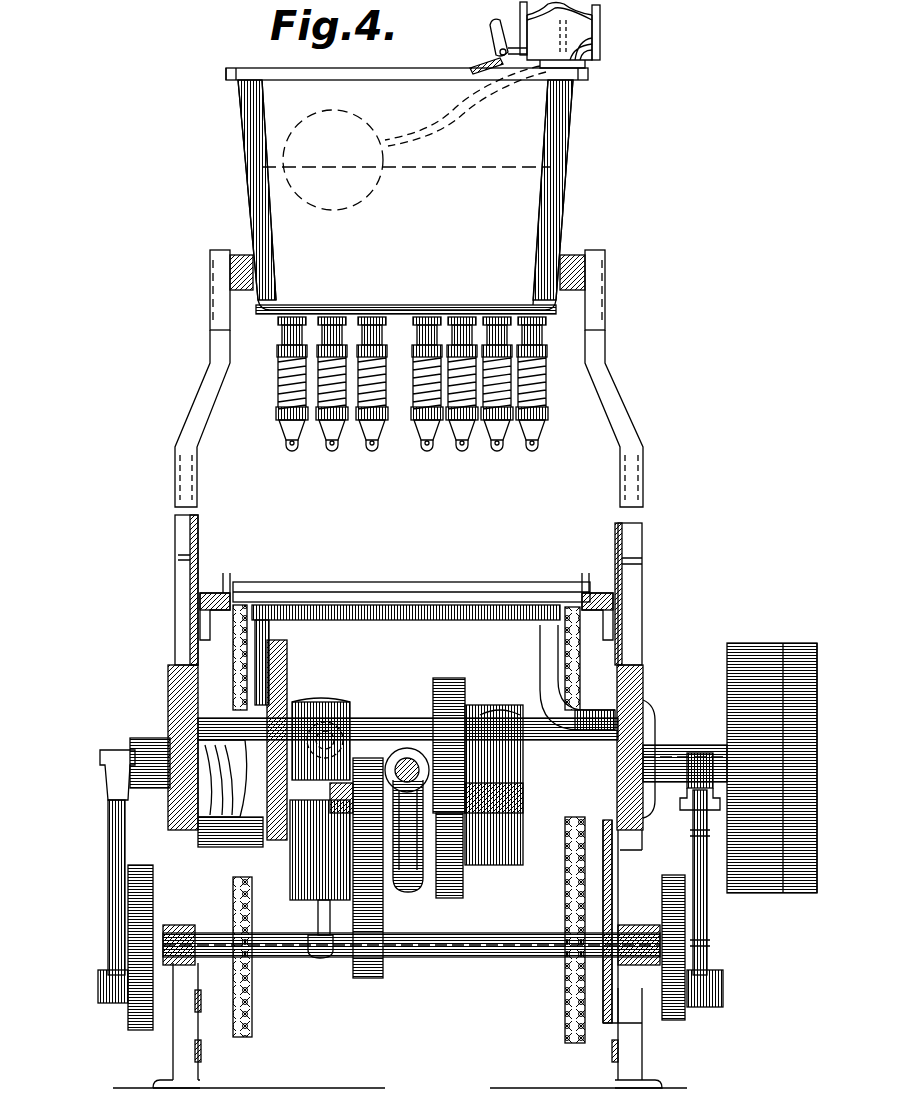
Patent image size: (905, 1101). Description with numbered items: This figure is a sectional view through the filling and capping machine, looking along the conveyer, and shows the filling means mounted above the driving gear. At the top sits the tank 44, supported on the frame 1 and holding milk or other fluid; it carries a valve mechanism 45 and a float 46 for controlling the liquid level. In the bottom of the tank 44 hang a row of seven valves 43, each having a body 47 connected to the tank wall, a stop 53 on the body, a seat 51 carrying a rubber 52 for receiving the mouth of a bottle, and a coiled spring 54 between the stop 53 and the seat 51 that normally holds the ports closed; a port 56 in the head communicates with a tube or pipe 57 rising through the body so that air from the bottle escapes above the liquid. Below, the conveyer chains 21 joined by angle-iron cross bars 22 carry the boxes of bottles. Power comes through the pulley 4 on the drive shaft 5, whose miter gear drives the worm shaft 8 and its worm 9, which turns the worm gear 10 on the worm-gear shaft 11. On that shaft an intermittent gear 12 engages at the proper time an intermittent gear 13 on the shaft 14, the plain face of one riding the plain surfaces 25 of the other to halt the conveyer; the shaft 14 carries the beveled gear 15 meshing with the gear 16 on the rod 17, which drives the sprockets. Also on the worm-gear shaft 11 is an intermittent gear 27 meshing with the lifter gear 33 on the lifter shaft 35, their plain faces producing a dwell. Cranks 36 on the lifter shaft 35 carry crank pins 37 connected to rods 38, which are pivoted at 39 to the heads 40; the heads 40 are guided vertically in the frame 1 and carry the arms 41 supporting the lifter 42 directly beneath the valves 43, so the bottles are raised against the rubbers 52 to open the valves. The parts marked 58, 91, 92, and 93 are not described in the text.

The frame 1 is at (195, 618).
The wheel or pulley 4 is at (775, 645).
The drive or power shaft 5 is at (718, 755).
The worm shaft 8 is at (402, 758).
The worm 9 is at (409, 752).
The worm gear 10 is at (410, 893).
The worm-gear shaft 11 is at (388, 865).
The intermittent or mutilated gear 12 is at (470, 895).
The mutilated or intermittent gear 13 is at (448, 700).
The shaft 14 is at (360, 738).
The gear 15 is at (287, 668).
The gear 16 is at (298, 722).
The rod 17 is at (330, 715).
The chains 21 is at (240, 656).
The cross bars 22 is at (500, 584).
The plain surfaces 25 is at (480, 712).
The intermittent gear 27 is at (350, 820).
The lifter gear 33 is at (378, 975).
The lifter shaft 35 is at (495, 958).
The cranks 36 is at (130, 1005).
The crank pins 37 is at (98, 990).
The rods 38 is at (110, 845).
The pivotal connection 39 is at (100, 773).
The heads 40 is at (168, 688).
The arms 41 is at (268, 636).
The lifter 42 is at (385, 614).
The valves 43 is at (288, 418).
The tank 44 is at (277, 212).
The valve mechanism 45 is at (556, 33).
The float 46 is at (383, 160).
The body 47 is at (283, 365).
The seat 51 is at (410, 418).
The rubber 52 is at (468, 430).
The stop 53 is at (282, 352).
The coiled spring 54 is at (282, 395).
The port 56 is at (502, 432).
The tube or pipe 57 is at (540, 363).
The frame base 58 is at (130, 1012).
The hanger bracket 91 is at (290, 850).
The bearing cap 92 is at (240, 790).
The bearing base 93 is at (240, 822).